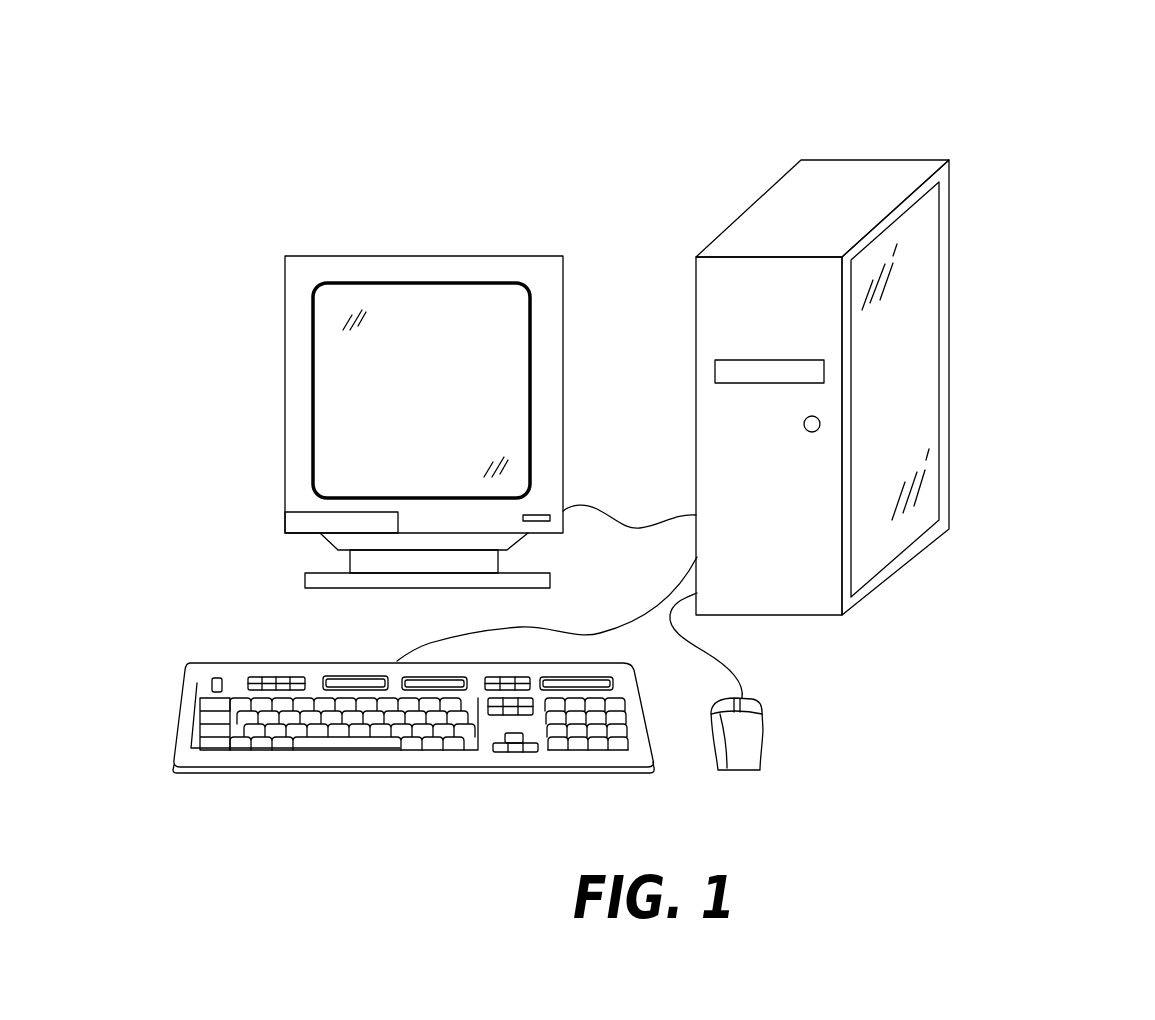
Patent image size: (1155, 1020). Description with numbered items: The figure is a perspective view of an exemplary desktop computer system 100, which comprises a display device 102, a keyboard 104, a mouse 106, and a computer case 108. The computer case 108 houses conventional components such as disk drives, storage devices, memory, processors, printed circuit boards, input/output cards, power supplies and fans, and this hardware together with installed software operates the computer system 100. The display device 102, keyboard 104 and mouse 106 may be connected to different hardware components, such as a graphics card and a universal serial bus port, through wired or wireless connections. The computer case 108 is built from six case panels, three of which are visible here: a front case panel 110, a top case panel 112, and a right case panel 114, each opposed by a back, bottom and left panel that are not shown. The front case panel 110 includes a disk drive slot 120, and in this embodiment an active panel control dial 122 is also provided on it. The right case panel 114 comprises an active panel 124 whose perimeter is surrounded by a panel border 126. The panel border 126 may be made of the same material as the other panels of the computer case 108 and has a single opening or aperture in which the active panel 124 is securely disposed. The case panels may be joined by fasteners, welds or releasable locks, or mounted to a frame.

The computer system 100 is at (1005, 705).
The display device 102 is at (293, 445).
The keyboard 104 is at (392, 772).
The mouse 106 is at (762, 730).
The computer case 108 is at (904, 118).
The front case panel 110 is at (792, 597).
The top case panel 112 is at (773, 206).
The right case panel 114 is at (976, 425).
The disk drive slot 120 is at (715, 368).
The active panel control dial 122 is at (811, 434).
The active panel 124 is at (902, 533).
The panel border 126 is at (940, 262).